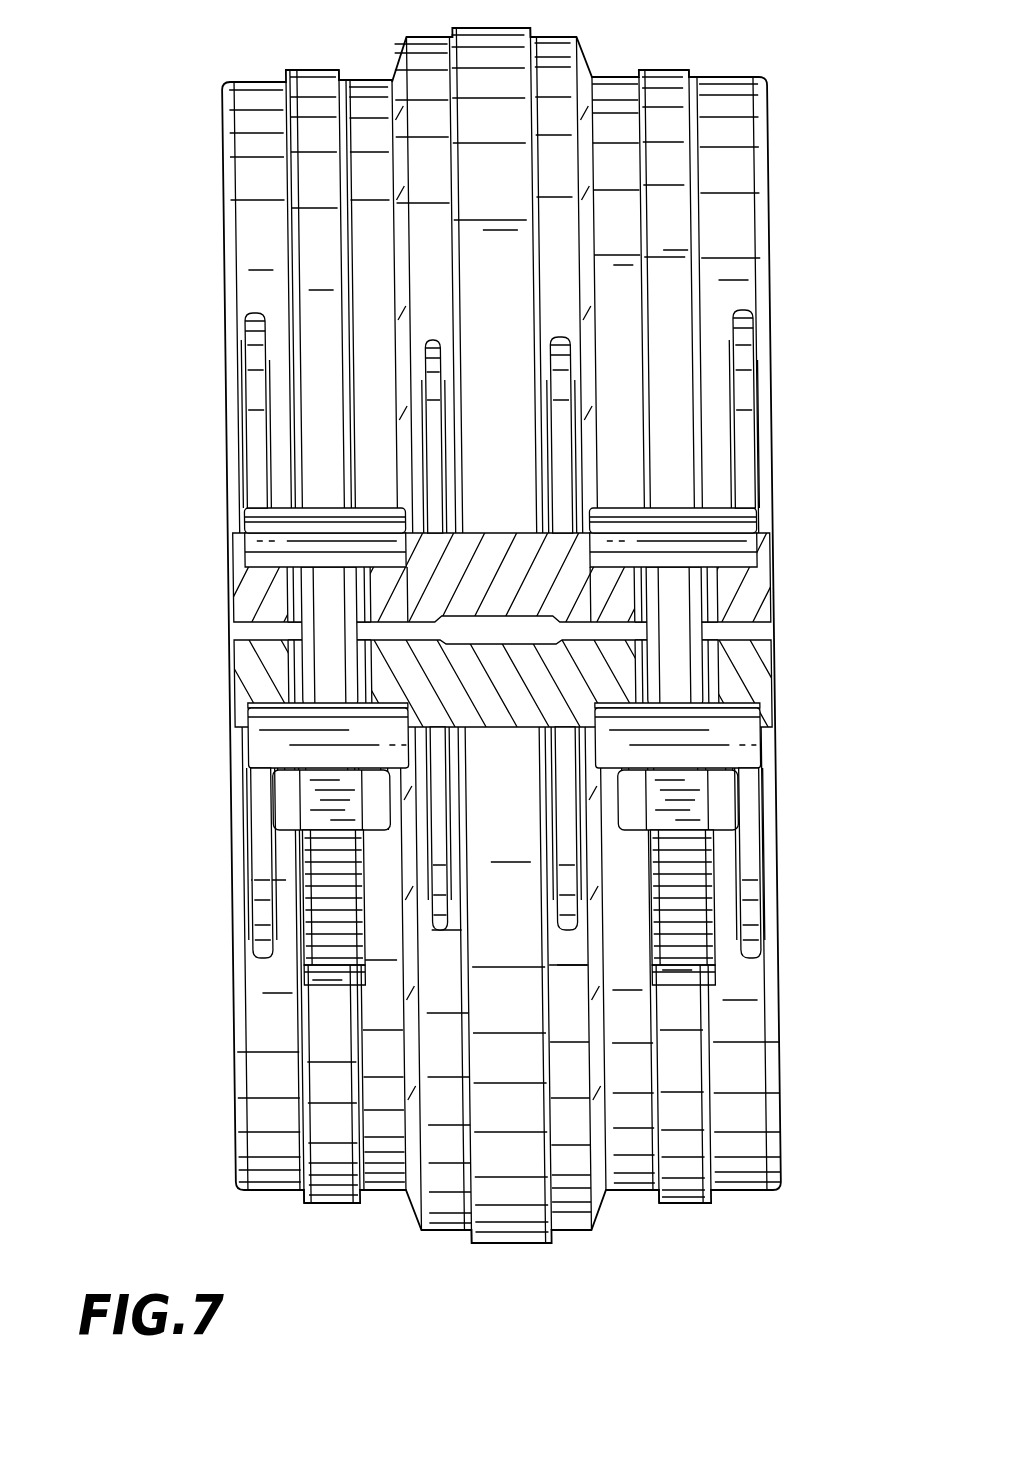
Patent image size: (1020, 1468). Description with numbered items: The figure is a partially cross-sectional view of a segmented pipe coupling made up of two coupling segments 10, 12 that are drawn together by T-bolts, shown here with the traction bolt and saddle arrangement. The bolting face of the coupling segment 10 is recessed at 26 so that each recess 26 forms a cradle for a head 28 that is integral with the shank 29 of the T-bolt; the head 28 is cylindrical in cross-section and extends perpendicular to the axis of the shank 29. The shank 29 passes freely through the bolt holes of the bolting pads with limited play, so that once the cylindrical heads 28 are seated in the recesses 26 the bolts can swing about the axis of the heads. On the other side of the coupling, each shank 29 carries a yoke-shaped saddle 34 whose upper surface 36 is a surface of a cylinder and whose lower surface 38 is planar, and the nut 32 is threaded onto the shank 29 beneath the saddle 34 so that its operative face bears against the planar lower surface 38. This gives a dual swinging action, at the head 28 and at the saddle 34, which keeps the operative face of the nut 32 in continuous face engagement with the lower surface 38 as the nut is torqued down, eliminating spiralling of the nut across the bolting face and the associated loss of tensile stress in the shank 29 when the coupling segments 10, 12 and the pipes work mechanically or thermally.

The coupling segment 10 is at (612, 105).
The coupling segment 12 is at (577, 1192).
The recess 26 is at (245, 556).
The head 28 is at (250, 523).
The shank of the T-bolt 29 is at (688, 680).
The nut 32 is at (312, 805).
The yoke-shaped saddle 34 is at (267, 748).
The upper surface of the saddle 36 is at (267, 733).
The lower surface of the saddle 38 is at (267, 772).